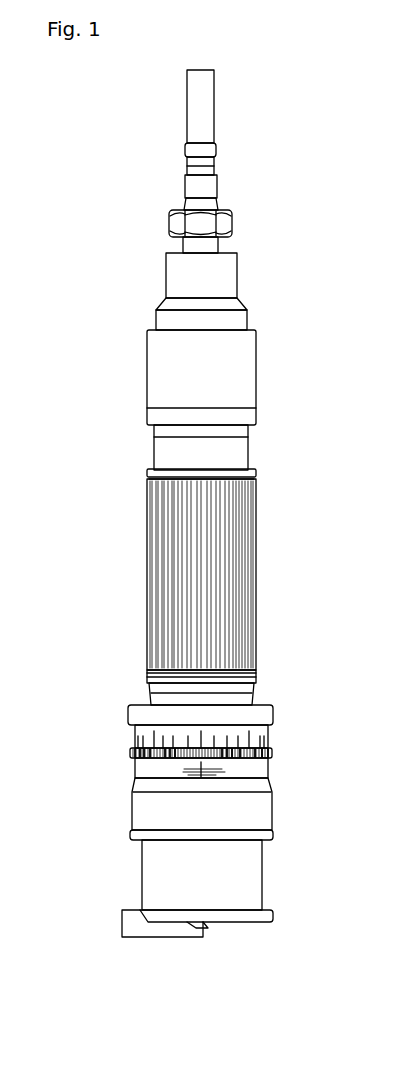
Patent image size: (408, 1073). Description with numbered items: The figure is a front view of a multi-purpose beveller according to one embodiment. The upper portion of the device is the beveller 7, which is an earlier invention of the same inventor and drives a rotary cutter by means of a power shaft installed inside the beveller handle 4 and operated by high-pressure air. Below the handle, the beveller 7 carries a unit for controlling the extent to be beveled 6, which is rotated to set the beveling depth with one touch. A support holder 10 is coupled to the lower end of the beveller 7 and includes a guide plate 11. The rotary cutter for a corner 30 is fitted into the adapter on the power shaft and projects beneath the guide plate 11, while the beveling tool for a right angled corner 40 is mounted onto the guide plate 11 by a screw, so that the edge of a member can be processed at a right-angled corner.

The beveller 7 is at (109, 518).
The beveller handle 4 is at (233, 573).
The unit for controlling the extent to be beveled 6 is at (130, 750).
The support holder 10 is at (246, 884).
The guide plate 11 is at (258, 918).
The rotary cutter for a corner 30 is at (205, 925).
The beveling tool for a right angled corner 40 is at (158, 937).